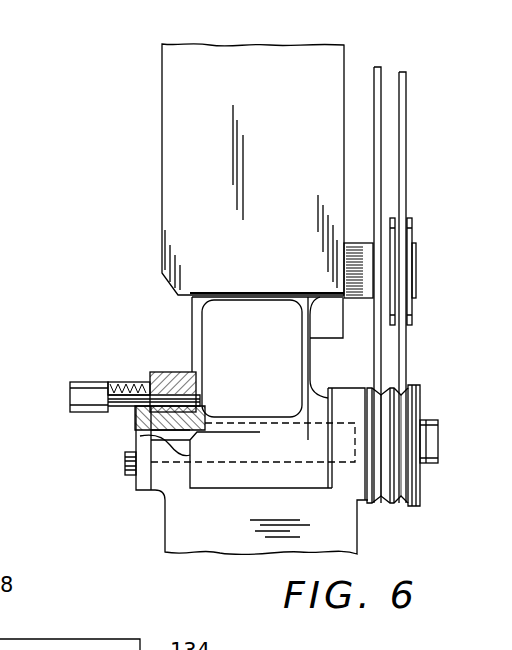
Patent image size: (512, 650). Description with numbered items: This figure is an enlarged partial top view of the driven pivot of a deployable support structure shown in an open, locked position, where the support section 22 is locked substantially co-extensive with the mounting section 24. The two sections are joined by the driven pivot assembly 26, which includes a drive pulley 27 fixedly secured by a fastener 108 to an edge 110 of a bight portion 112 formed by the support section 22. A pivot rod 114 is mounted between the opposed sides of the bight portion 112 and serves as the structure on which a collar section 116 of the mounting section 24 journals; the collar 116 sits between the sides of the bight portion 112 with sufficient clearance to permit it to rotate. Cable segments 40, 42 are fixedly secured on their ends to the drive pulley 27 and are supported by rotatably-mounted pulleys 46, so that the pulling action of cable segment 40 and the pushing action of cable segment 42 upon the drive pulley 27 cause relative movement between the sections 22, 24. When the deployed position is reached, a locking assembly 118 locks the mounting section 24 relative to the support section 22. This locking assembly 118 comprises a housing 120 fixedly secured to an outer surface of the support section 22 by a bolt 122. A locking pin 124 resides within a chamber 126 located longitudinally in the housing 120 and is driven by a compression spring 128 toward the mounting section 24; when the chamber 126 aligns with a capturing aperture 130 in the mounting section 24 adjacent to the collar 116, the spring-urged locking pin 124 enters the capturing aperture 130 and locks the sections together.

The support section 22 is at (352, 541).
The mounting section 24 is at (166, 110).
The driven pivot assembly 26 is at (424, 374).
The drive pulley 27 is at (420, 400).
The cable segment 40 is at (406, 72).
The cable segment 42 is at (378, 66).
The pulley 46 is at (411, 233).
The fastener 108 is at (430, 441).
The edge 110 is at (360, 482).
The bight portion 112 is at (165, 486).
The pivot rod 114 is at (236, 465).
The collar section 116 is at (316, 392).
The locking assembly 118 is at (150, 370).
The housing 120 is at (135, 420).
The bolt 122 is at (125, 465).
The locking pin 124 is at (168, 373).
The chamber 126 is at (110, 413).
The compression spring 128 is at (118, 383).
The capturing aperture 130 is at (198, 390).